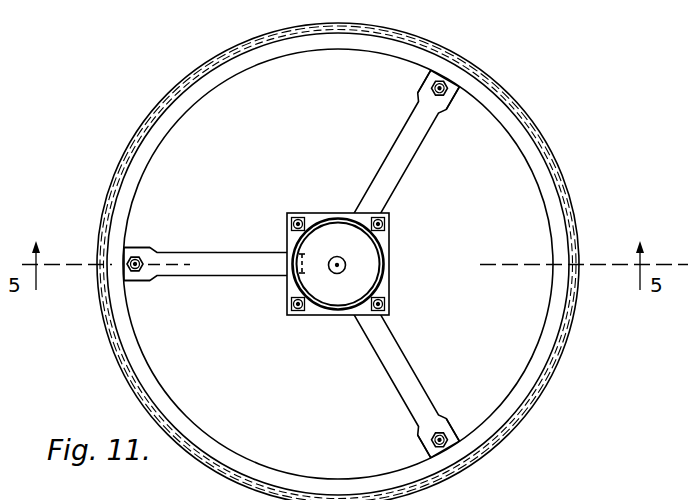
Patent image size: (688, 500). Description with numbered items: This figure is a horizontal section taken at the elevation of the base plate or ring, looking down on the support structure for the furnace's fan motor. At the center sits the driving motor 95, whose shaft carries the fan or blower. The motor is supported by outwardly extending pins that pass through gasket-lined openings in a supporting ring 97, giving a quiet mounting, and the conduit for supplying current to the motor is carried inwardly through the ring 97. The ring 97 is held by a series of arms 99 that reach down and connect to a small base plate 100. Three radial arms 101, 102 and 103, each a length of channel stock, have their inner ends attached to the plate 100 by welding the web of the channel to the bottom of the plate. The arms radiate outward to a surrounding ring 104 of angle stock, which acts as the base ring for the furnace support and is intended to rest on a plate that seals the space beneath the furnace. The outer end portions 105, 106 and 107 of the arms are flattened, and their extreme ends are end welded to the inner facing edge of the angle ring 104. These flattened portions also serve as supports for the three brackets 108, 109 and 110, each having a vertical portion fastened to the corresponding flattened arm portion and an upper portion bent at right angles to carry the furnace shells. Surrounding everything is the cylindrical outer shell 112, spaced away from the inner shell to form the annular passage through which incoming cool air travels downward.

The driving motor 95 is at (362, 261).
The supporting ring 97 is at (386, 277).
The arms 99 is at (291, 224).
The base plate 100 is at (389, 295).
The radial arm 101 is at (179, 259).
The radial arm 102 is at (448, 146).
The radial arm 103 is at (417, 381).
The surrounding ring 104 is at (147, 382).
The outer end of arm 105 is at (152, 247).
The outer end of arm 106 is at (428, 89).
The outer end of arm 107 is at (442, 428).
The bracket 108 is at (128, 272).
The bracket 109 is at (457, 85).
The bracket 110 is at (427, 448).
The outer shell 112 is at (560, 175).